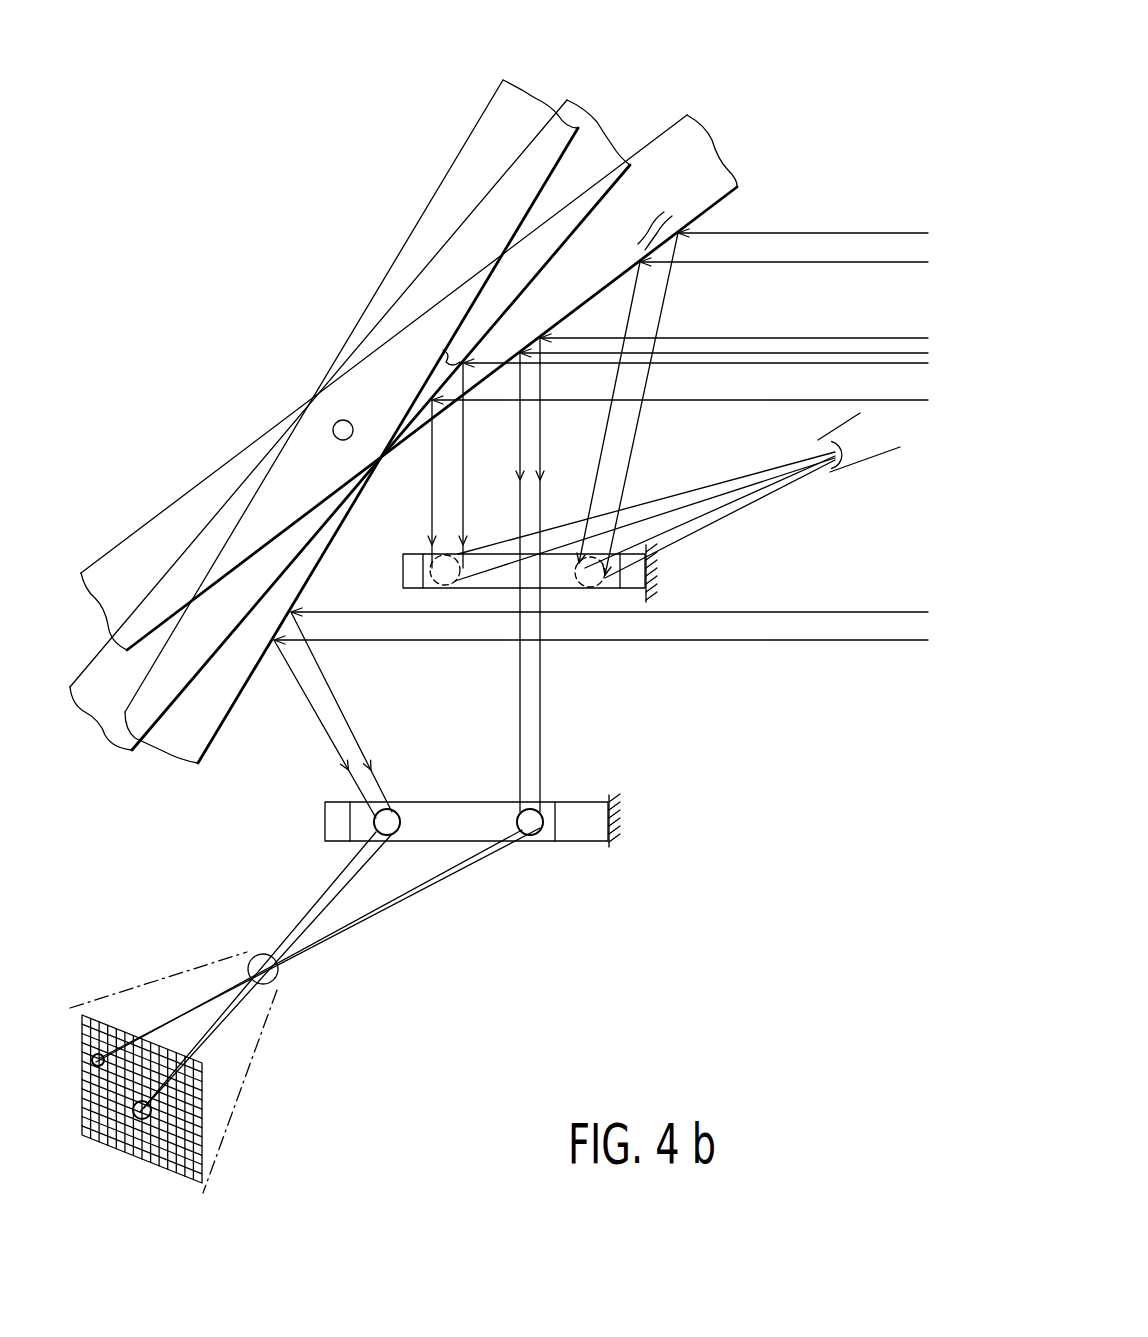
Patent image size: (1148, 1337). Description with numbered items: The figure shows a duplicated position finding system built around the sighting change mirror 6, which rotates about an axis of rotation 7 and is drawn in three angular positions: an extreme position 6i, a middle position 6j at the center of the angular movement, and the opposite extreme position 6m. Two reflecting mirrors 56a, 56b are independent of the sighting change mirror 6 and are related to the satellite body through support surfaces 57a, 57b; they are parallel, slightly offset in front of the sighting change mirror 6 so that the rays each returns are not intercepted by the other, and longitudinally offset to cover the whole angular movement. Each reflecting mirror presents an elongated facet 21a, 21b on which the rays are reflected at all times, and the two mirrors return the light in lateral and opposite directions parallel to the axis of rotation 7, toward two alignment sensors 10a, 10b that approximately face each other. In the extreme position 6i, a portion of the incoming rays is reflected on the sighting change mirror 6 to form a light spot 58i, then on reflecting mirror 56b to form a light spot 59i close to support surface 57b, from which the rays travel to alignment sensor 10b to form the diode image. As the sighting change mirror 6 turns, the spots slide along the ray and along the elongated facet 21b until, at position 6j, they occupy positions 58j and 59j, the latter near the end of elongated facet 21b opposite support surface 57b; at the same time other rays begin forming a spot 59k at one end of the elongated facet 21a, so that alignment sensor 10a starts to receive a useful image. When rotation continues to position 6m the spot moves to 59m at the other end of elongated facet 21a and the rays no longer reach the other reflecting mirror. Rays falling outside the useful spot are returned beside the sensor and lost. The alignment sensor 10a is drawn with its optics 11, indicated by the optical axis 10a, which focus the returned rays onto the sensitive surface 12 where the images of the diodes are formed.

The sighting change mirror 6 is at (418, 167).
The sighting change mirror extreme position 6m is at (570, 150).
The sighting change mirror middle position 6j is at (617, 167).
The sighting change mirror extreme position 6i is at (712, 210).
The axis of rotation 7 is at (333, 430).
The light spot 58i is at (655, 212).
The light spot 58j is at (443, 358).
The light spot 59i is at (590, 594).
The light spot 59j is at (428, 571).
The light spot 59k is at (528, 838).
The light spot 59m is at (374, 822).
The elongated facet 21a is at (456, 815).
The elongated facet 21b is at (498, 590).
The reflecting mirror 56a is at (556, 846).
The reflecting mirror 56b is at (620, 593).
The support surface 57a is at (608, 805).
The support surface 57b is at (652, 570).
The alignment sensor 10a is at (173, 1066).
The alignment sensor 10b is at (900, 465).
The optics 11 is at (278, 975).
The sensitive surface 12 is at (185, 1140).